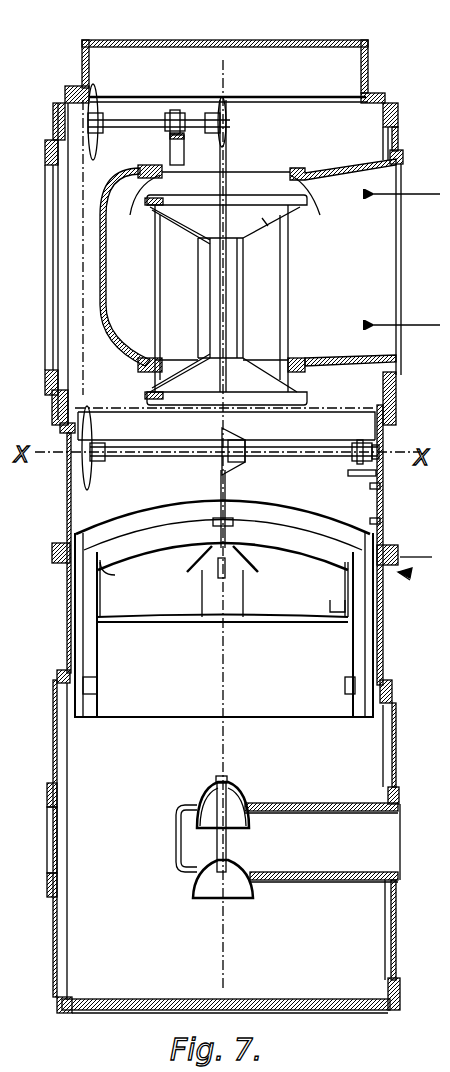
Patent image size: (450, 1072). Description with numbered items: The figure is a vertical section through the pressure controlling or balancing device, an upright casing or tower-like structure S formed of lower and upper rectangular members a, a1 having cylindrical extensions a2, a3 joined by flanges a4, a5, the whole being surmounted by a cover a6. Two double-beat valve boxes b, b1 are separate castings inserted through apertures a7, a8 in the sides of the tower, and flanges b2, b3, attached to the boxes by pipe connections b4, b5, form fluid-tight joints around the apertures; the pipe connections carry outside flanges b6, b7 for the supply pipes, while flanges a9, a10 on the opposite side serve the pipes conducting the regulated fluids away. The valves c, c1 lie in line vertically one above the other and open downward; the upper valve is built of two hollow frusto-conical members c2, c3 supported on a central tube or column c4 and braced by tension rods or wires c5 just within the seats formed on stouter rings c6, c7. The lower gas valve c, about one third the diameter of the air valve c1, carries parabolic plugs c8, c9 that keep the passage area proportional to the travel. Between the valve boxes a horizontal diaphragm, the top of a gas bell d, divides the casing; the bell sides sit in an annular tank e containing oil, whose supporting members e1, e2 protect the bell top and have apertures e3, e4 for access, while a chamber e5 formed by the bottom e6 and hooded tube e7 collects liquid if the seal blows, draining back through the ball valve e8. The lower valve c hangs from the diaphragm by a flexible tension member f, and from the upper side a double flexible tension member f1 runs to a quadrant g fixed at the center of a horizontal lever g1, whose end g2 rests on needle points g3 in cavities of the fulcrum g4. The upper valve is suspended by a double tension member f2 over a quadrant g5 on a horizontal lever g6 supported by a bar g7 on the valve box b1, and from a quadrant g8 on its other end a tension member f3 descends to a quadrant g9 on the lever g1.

The upright casing or tower-like structure S is at (225, 53).
The lower rectangular member a is at (226, 846).
The upper rectangular member a1 is at (226, 426).
The cylindrical extension a2 is at (385, 652).
The cylindrical extension a3 is at (390, 465).
The flange a4 is at (409, 585).
The flange a5 is at (398, 547).
The cover a6 is at (210, 42).
The aperture a7 is at (385, 950).
The aperture a8 is at (383, 385).
The flange a9 is at (57, 882).
The flange a10 is at (52, 380).
The double-beat valve box b is at (180, 815).
The double-beat valve box b1 is at (105, 300).
The flange b2 is at (392, 695).
The flange b3 is at (398, 118).
The pipe connection b4 is at (310, 805).
The pipe connection b5 is at (285, 172).
The flange b6 is at (400, 797).
The flange b7 is at (410, 158).
The double-beat valve c is at (226, 526).
The double-beat valve c1 is at (221, 298).
The hollow frusto-conical member c2 is at (262, 222).
The hollow frusto-conical member c3 is at (280, 368).
The central tube or column c4 is at (240, 327).
The tension rods or wires c5 is at (162, 285).
The ring c6 is at (233, 207).
The ring c7 is at (305, 400).
The parabolic plug c8 is at (240, 800).
The parabolic plug c9 is at (250, 870).
The gas bell d is at (117, 580).
The annular tank e is at (92, 738).
The supporting member e1 is at (150, 560).
The supporting member e2 is at (138, 510).
The aperture e3 is at (213, 548).
The aperture e4 is at (215, 512).
The chamber e5 is at (302, 595).
The bottom e6 is at (170, 622).
The hooded tube e7 is at (243, 592).
The ball valve e8 is at (345, 618).
The flexible tension member f is at (224, 670).
The double flexible tension member f1 is at (228, 490).
The double flexible tension member f2 is at (223, 158).
The flexible tension member f3 is at (95, 345).
The quadrant g is at (240, 450).
The horizontal lever g1 is at (230, 440).
The end of lever g2 is at (335, 460).
The needle points g3 is at (380, 450).
The fulcrum g4 is at (355, 466).
The quadrant g5 is at (226, 118).
The horizontal lever g6 is at (150, 125).
The bar g7 is at (178, 150).
The quadrant g8 is at (101, 130).
The quadrant g9 is at (103, 438).